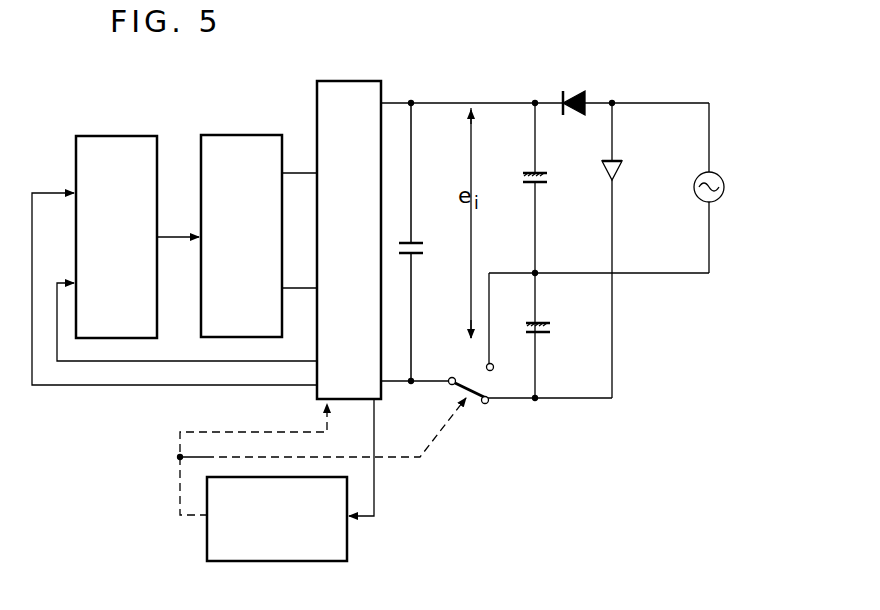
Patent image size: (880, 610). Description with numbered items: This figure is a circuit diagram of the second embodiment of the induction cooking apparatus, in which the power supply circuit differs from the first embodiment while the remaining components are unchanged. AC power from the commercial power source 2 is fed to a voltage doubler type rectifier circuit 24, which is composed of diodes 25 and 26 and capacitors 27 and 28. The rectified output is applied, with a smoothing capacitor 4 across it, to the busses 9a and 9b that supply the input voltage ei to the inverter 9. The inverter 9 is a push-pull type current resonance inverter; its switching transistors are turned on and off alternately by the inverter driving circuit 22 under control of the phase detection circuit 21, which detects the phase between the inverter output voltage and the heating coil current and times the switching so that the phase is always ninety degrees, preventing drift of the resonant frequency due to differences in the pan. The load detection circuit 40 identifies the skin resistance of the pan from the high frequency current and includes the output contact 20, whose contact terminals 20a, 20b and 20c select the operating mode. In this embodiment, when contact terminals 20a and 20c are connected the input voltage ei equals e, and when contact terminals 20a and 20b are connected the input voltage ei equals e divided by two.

The commercial power source 2 is at (724, 187).
The smoothing capacitor 4 is at (416, 240).
The inverter 9 is at (348, 81).
The bus 9a is at (394, 101).
The bus 9b is at (397, 383).
The output contact 20 is at (482, 361).
The contact terminal 20a is at (453, 377).
The contact terminal 20b is at (494, 366).
The contact terminal 20c is at (503, 385).
The phase detection circuit 21 is at (113, 136).
The inverter driving circuit 22 is at (240, 135).
The voltage doubler type rectifier circuit 24 is at (597, 226).
The diode 25 is at (568, 92).
The diode 26 is at (622, 170).
The capacitor 27 is at (526, 173).
The capacitor 28 is at (552, 326).
The load detection circuit 40 is at (207, 553).